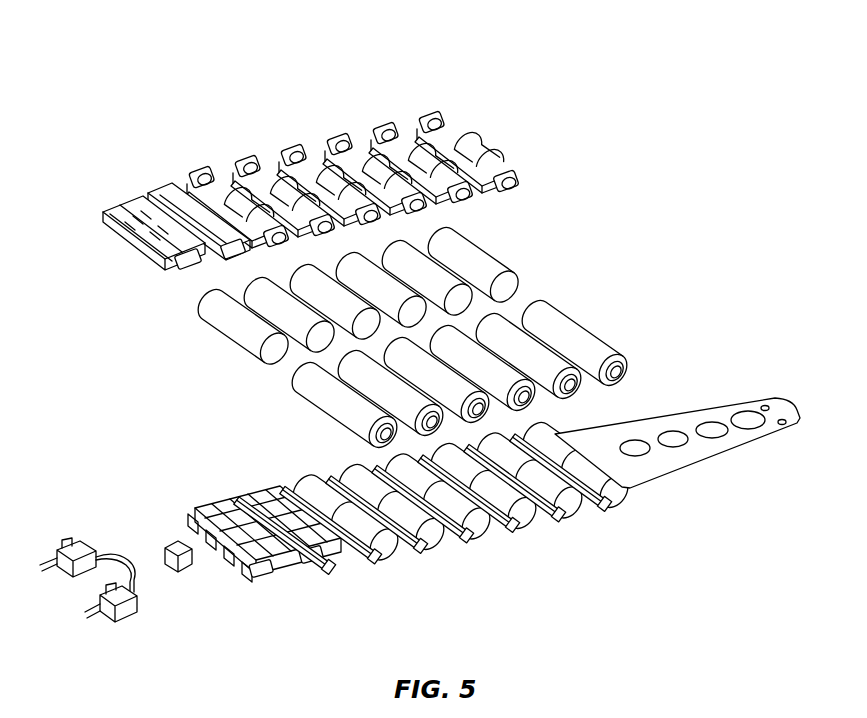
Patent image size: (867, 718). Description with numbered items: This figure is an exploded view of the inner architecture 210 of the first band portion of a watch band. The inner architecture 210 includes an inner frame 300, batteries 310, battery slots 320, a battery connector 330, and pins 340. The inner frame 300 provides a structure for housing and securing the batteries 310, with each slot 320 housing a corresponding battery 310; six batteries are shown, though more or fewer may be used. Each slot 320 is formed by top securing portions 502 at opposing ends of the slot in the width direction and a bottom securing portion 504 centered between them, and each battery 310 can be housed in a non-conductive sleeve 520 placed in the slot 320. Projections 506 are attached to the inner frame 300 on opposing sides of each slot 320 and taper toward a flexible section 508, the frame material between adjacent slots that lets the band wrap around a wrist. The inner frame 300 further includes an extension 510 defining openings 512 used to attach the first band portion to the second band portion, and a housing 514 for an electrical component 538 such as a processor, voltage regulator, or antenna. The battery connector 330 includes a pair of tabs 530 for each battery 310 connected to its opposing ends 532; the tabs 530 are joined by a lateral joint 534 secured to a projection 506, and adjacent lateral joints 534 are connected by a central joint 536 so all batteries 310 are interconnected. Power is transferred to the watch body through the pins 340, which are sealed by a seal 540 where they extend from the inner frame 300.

The inner architecture 210 is at (678, 222).
The inner frame 300 is at (515, 560).
The battery 310 is at (573, 332).
The battery slot 320 is at (380, 550).
The battery connector 330 is at (451, 92).
The pin 340 is at (130, 613).
The top securing portion 502 is at (307, 482).
The bottom securing portion 504 is at (485, 528).
The projection 506 is at (550, 510).
The flexible section 508 is at (540, 517).
The extension 510 is at (642, 470).
The opening 512 is at (750, 417).
The housing 514 is at (288, 587).
The sleeve 520 is at (483, 258).
The tab 530 is at (517, 181).
The opposing end 532 is at (528, 308).
The lateral joint 534 is at (258, 182).
The central joint 536 is at (242, 200).
The electrical component 538 is at (112, 205).
The seal 540 is at (173, 542).